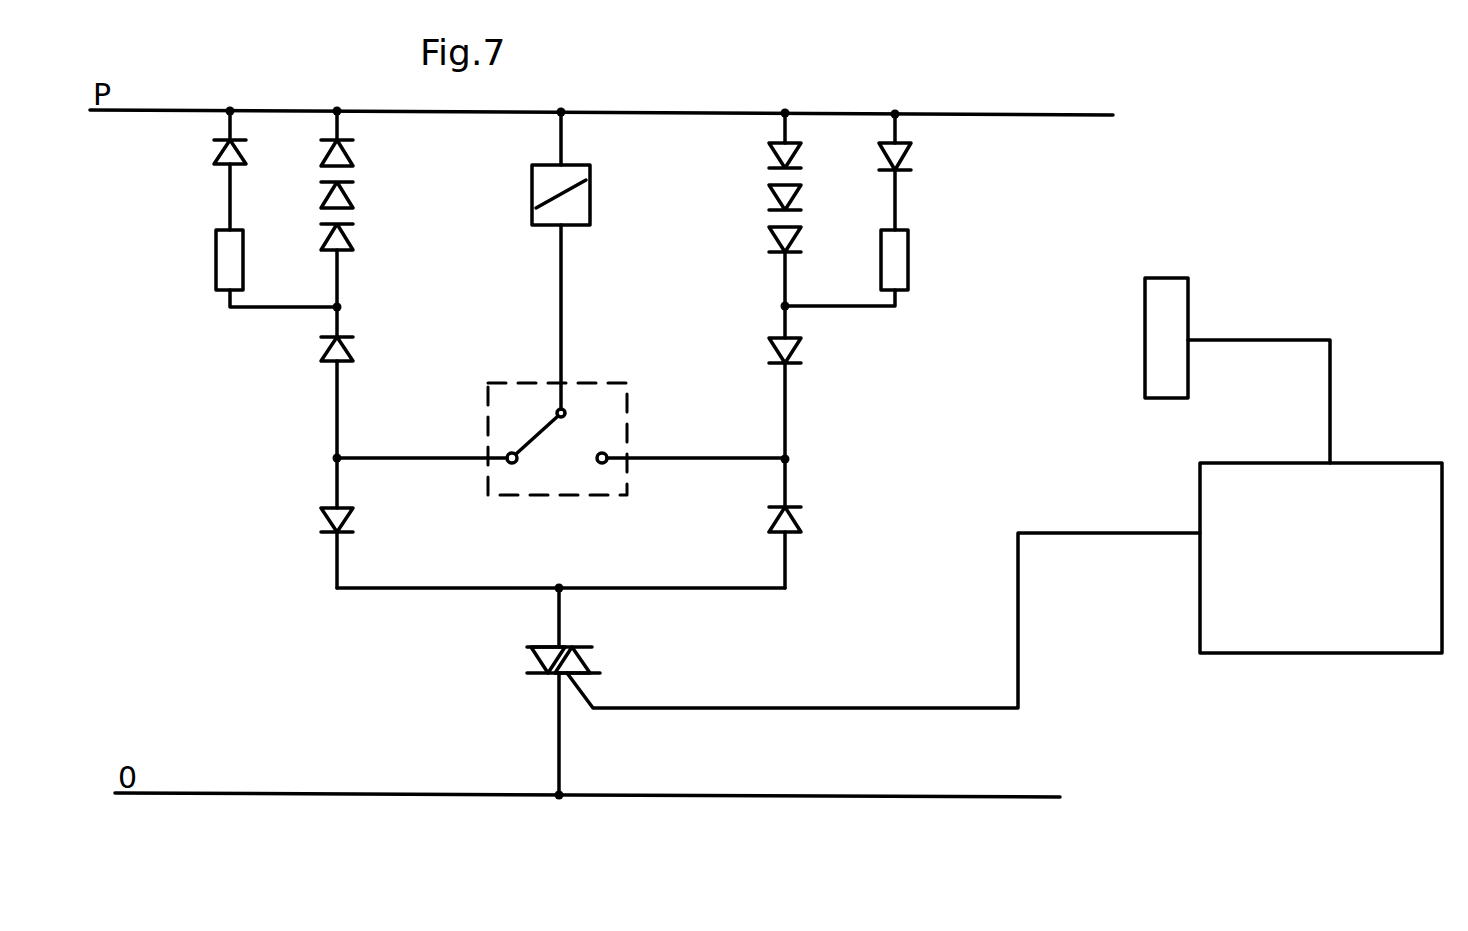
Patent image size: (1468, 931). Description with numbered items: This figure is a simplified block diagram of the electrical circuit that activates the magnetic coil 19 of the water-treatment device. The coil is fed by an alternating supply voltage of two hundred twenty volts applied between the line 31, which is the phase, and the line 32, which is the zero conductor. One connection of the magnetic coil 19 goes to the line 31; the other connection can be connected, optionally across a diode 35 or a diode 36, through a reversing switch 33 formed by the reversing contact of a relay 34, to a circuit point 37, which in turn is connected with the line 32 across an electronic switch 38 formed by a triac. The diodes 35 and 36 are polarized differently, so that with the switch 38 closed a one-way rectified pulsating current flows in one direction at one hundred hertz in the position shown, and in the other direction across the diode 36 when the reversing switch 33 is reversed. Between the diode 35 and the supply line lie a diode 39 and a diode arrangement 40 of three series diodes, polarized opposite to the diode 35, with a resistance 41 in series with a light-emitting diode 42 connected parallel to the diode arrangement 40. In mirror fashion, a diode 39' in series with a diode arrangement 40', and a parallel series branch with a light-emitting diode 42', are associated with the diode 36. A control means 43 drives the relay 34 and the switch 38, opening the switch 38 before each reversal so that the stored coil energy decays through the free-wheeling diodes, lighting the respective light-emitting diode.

The magnetic coil 19 is at (590, 215).
The line 31 is at (1043, 113).
The line 32 is at (1000, 797).
The reversing switch 33 is at (523, 478).
The relay 34 is at (608, 497).
The diode 35 is at (323, 520).
The diode 36 is at (773, 522).
The circuit point 37 is at (555, 590).
The electronic switch 38 is at (527, 693).
The diode 39 is at (295, 376).
The diode 39' is at (831, 397).
The diode arrangement 40 is at (411, 195).
The diode arrangement 40' is at (759, 240).
The resistance 41 is at (227, 258).
The light-emitting diode 42 is at (194, 183).
The light-emitting diode 42' is at (956, 166).
The control means 43 is at (1325, 617).